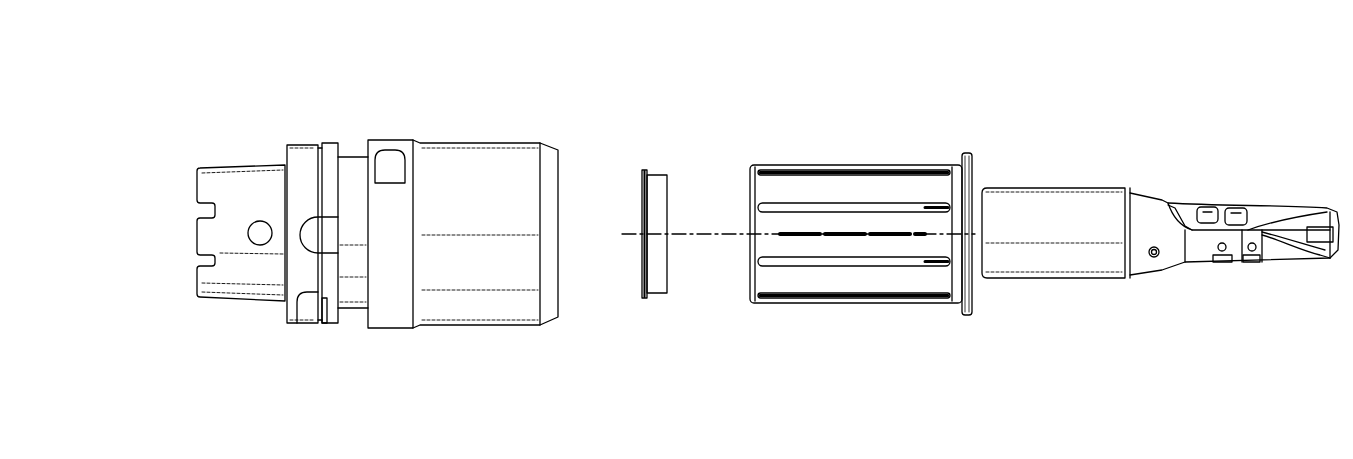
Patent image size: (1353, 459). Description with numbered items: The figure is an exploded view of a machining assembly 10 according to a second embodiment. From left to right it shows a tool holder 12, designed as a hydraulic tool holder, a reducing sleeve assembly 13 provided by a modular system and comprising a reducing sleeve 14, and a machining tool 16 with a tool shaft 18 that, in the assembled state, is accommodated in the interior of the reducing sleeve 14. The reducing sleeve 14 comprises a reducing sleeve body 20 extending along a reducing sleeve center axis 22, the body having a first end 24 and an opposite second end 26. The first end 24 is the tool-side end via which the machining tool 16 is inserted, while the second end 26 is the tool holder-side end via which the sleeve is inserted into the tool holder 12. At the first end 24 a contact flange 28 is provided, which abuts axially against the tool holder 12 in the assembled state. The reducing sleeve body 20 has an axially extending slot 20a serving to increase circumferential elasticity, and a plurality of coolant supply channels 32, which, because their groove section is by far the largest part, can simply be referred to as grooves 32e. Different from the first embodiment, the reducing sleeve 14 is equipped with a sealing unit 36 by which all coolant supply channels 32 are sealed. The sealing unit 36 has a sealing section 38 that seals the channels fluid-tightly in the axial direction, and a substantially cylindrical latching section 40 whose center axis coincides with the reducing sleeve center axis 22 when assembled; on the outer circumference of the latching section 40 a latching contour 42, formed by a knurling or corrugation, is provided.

The machining assembly 10 is at (1240, 110).
The tool holder 12 is at (460, 130).
The reducing sleeve assembly 13 is at (860, 138).
The reducing sleeve 14 is at (894, 255).
The machining tool 16 is at (1159, 157).
The tool shaft 18 is at (1084, 178).
The reducing sleeve body 20 is at (826, 165).
The slot 20a is at (963, 262).
The reducing sleeve center axis 22 is at (720, 245).
The first end 24 is at (994, 162).
The second end 26 is at (743, 178).
The contact flange 28 is at (967, 322).
The coolant supply channels 32 is at (925, 205).
The groove 32e is at (854, 234).
The sealing unit 36 is at (650, 163).
The sealing section 38 is at (643, 297).
The latching section 40 is at (650, 191).
The latching contour 42 is at (654, 297).